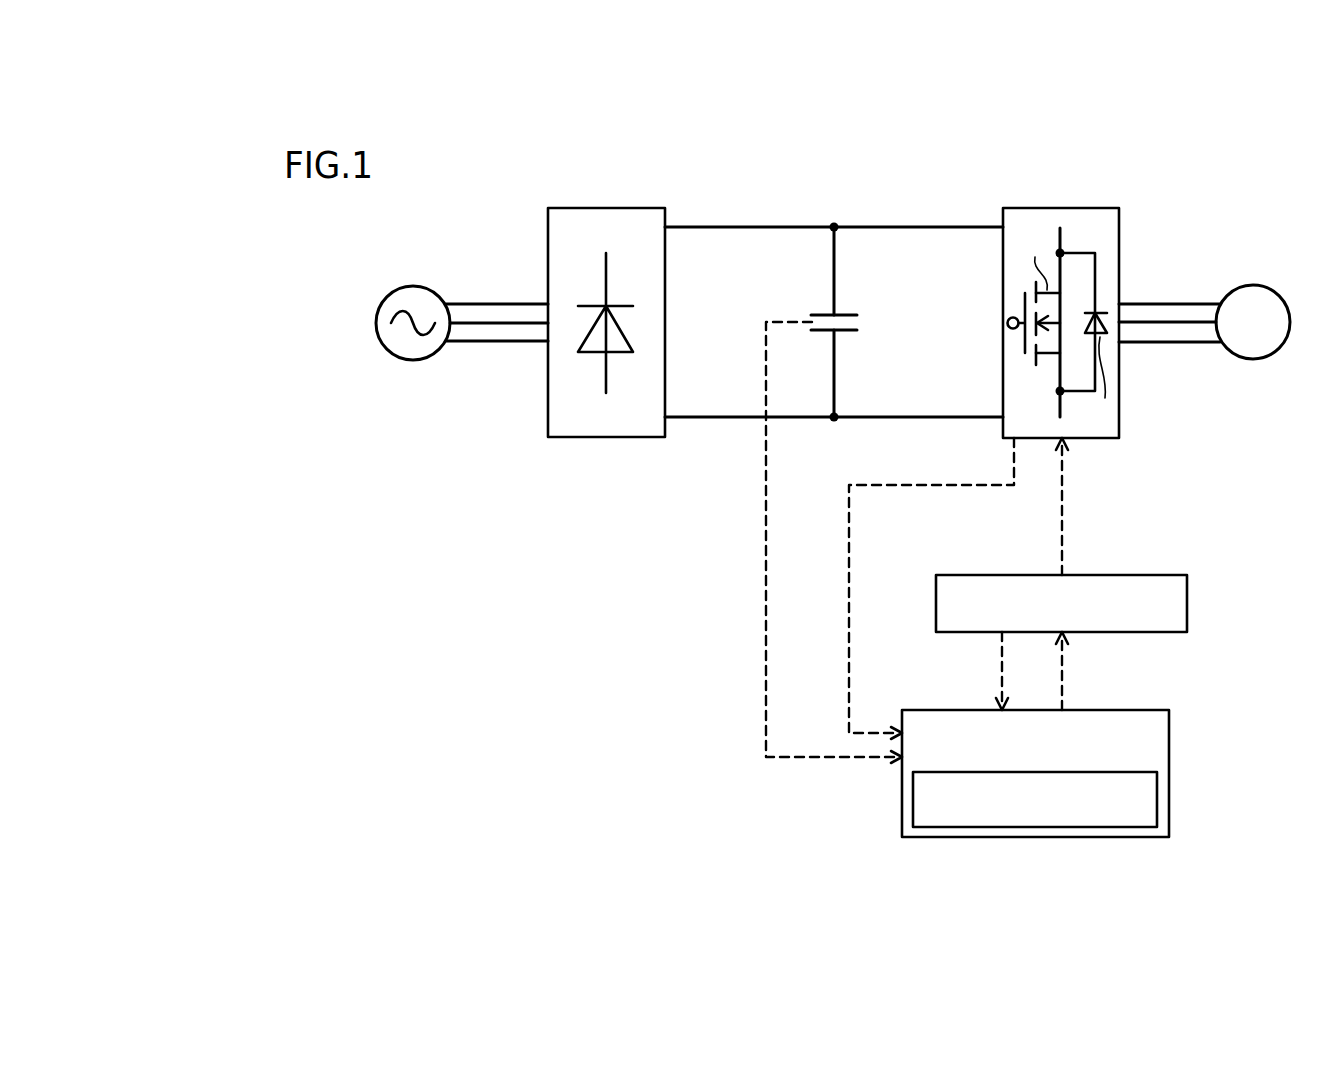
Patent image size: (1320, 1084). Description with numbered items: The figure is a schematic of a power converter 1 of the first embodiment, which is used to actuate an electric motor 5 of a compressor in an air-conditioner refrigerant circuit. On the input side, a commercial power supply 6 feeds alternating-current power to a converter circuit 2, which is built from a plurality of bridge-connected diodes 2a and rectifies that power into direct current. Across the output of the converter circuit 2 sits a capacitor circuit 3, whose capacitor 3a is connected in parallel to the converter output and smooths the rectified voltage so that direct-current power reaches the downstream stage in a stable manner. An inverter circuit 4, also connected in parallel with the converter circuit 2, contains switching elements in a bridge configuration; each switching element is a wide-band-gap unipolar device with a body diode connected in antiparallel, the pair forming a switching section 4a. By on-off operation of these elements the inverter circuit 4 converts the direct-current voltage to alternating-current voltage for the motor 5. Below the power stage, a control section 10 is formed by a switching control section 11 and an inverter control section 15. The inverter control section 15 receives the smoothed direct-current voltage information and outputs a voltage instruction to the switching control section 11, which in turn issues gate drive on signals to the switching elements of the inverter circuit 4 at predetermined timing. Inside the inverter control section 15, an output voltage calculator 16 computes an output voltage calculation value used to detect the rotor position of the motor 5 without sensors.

The power converter 1 is at (1208, 121).
The converter circuit 2 is at (622, 208).
The diode 2a is at (593, 355).
The capacitor circuit 3 is at (845, 300).
The capacitor 3a is at (847, 333).
The inverter circuit 4 is at (1088, 208).
The switching section 4a is at (1037, 372).
The electric motor 5 is at (1257, 286).
The commercial power supply 6 is at (413, 287).
The control section 10 is at (1113, 867).
The switching control section 11 is at (1187, 600).
The inverter control section 15 is at (900, 806).
The output voltage calculator 16 is at (1002, 828).